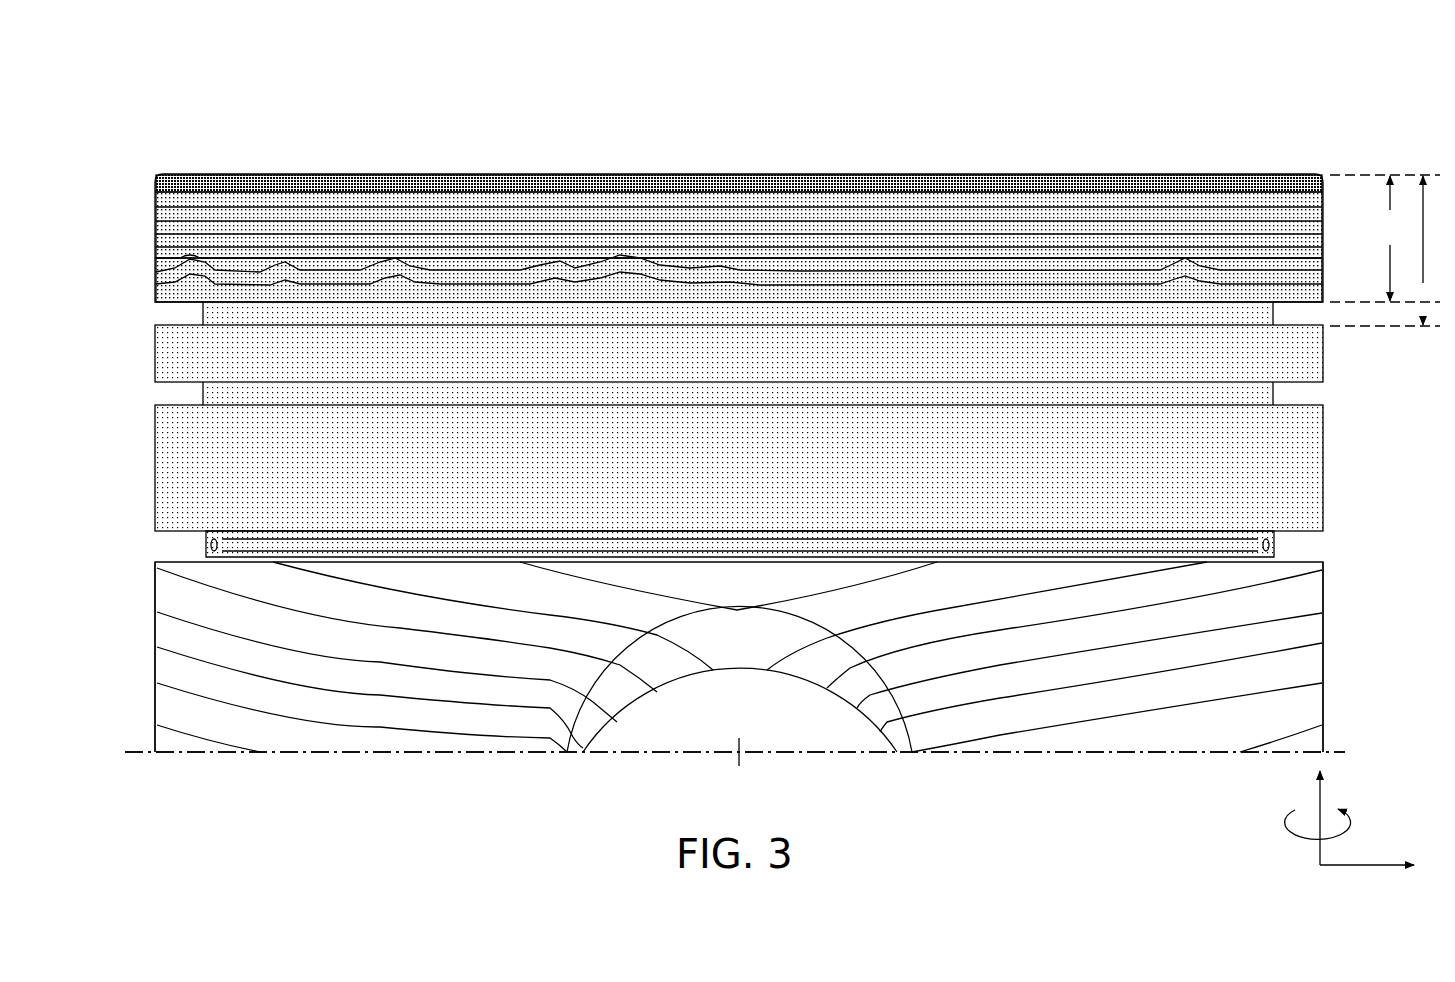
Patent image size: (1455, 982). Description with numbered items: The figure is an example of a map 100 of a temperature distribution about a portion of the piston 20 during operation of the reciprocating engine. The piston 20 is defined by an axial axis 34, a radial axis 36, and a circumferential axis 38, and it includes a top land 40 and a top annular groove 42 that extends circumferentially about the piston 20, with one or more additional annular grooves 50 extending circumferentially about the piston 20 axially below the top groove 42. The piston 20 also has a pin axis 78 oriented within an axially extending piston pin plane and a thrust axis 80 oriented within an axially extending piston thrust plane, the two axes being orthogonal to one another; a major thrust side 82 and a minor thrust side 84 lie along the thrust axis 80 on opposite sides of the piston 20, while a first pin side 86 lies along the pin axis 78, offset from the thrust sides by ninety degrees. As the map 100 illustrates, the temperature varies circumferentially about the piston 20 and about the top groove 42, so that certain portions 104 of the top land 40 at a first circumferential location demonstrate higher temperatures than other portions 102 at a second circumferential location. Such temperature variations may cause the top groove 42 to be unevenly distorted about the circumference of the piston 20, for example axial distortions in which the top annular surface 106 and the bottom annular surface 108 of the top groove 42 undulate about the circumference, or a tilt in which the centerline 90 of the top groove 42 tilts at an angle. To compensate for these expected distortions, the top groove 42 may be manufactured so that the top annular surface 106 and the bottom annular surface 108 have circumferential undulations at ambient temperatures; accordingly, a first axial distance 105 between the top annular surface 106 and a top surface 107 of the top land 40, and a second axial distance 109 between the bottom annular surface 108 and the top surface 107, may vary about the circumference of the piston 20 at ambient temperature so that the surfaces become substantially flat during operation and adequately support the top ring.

The map 100 is at (1245, 81).
The piston 20 is at (1290, 141).
The top portion 40 is at (1323, 197).
The top annular groove 42 is at (1316, 305).
The additional annular grooves 50 is at (1308, 382).
The pin axis 78 is at (739, 757).
The thrust axis 80 is at (1104, 752).
The major thrust side 82 is at (155, 669).
The minor thrust side 84 is at (1323, 664).
The first pin side 86 is at (745, 589).
The centerline 90 is at (1295, 310).
The other portions 102 is at (643, 266).
The certain portions 104 is at (938, 268).
The first axial distance 105 is at (1385, 238).
The top annular surface 106 is at (447, 300).
The top surface 107 is at (1240, 174).
The bottom annular surface 108 is at (453, 327).
The second axial distance 109 is at (1388, 251).
The axial axis 34 is at (1318, 797).
The radial axis 36 is at (1358, 865).
The circumferential axis 38 is at (1298, 844).